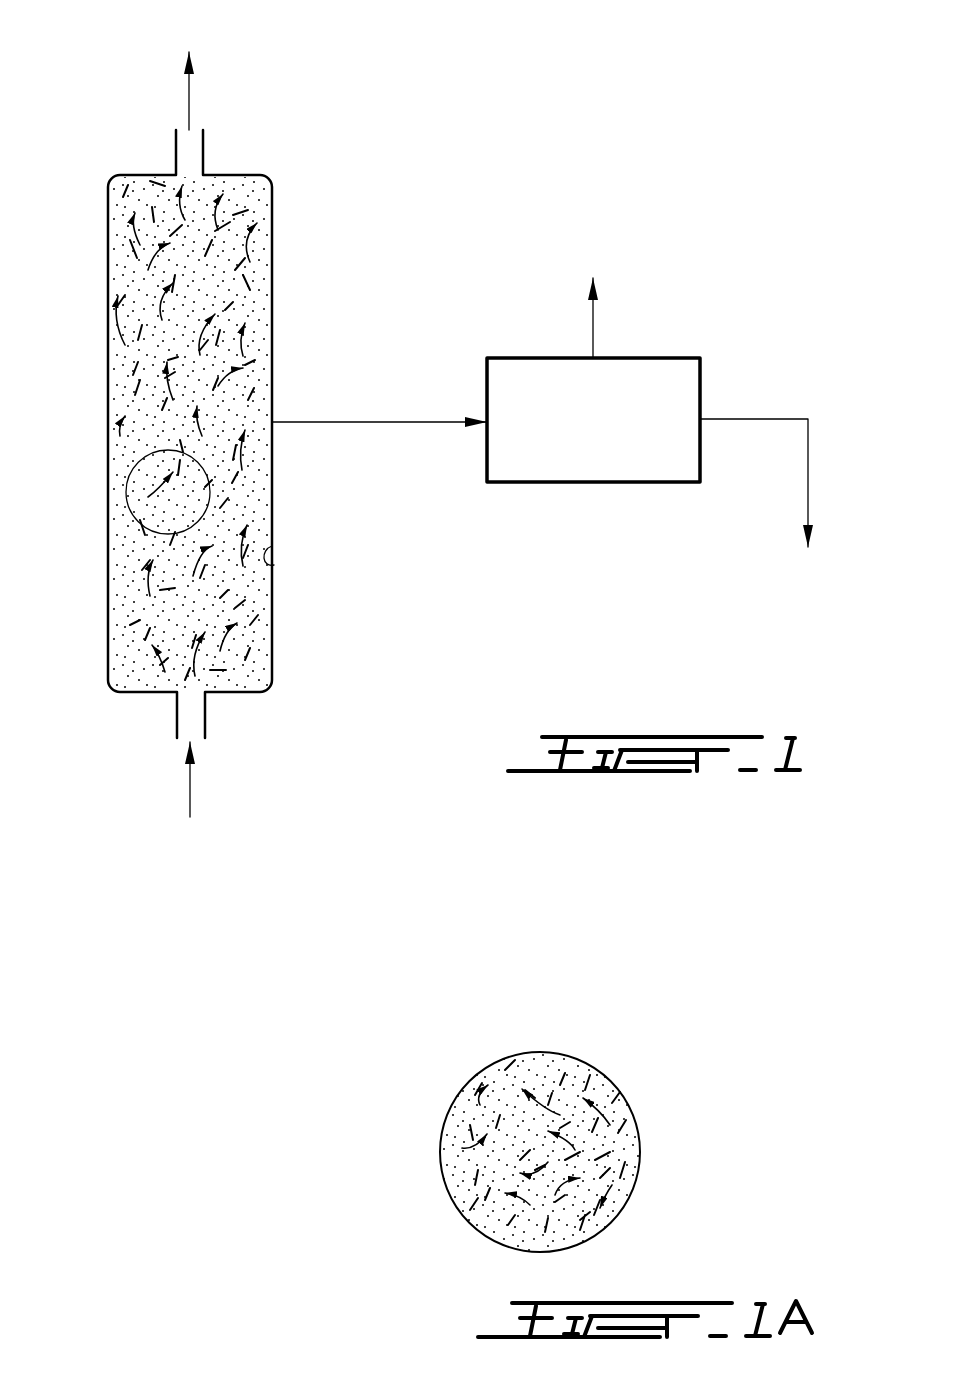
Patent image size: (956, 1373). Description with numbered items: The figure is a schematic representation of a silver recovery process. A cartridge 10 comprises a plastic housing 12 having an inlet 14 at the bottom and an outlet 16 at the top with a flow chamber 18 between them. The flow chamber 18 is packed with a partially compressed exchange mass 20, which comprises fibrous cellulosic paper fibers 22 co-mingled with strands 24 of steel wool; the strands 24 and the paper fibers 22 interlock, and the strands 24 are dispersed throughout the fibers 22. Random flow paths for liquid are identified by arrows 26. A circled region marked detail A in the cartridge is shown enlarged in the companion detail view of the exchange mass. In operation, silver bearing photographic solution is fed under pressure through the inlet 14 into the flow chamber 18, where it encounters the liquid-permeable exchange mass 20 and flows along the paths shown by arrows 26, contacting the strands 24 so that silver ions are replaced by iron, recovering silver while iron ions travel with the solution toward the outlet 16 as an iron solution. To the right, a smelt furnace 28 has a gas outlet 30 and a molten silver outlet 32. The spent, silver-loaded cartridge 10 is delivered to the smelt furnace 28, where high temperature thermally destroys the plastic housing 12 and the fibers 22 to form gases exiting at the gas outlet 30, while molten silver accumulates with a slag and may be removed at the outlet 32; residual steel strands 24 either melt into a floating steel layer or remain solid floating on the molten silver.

In FIG. 1, the cartridge 10 is at (261, 434).
In FIG. 1, the plastic housing 12 is at (272, 647).
In FIG. 1, the inlet 14 is at (205, 716).
In FIG. 1, the outlet 16 is at (205, 155).
In FIG. 1, the flow chamber 18 is at (274, 565).
In FIG. 1, the exchange mass 20 is at (256, 409).
In FIG. 1, the fibrous cellulosic paper fibers 22 is at (270, 283).
In FIG. 1A, the fibrous cellulosic paper fibers 22 is at (588, 1072).
In FIG. 1, the strands of steel wool 24 is at (262, 482).
In FIG. 1A, the strands of steel wool 24 is at (512, 1075).
In FIG. 1, the arrows 26 is at (158, 662).
In FIG. 1A, the arrows 26 is at (462, 1149).
In FIG. 1, the smelt furnace 28 is at (680, 378).
In FIG. 1, the gas outlet 30 is at (593, 334).
In FIG. 1, the molten silver outlet 32 is at (808, 472).
In FIG. 1, the detail A is at (128, 492).